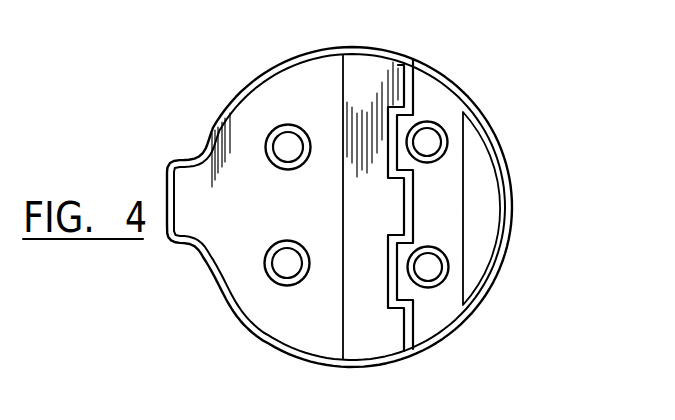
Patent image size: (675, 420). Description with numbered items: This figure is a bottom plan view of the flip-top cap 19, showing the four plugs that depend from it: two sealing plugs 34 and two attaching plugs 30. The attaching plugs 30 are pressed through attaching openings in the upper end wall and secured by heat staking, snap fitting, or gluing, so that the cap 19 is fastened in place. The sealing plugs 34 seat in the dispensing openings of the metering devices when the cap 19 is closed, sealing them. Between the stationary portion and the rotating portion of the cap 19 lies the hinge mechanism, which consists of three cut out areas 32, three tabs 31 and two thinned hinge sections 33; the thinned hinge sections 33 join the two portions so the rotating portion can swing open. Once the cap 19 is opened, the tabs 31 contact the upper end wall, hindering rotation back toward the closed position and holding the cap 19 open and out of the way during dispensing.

The flip-top cap 19 is at (530, 216).
The attaching plugs 30 is at (420, 123).
The tabs 31 is at (392, 70).
The cut out areas 32 is at (405, 222).
The thinned hinge sections 33 is at (393, 148).
The sealing plugs 34 is at (272, 131).